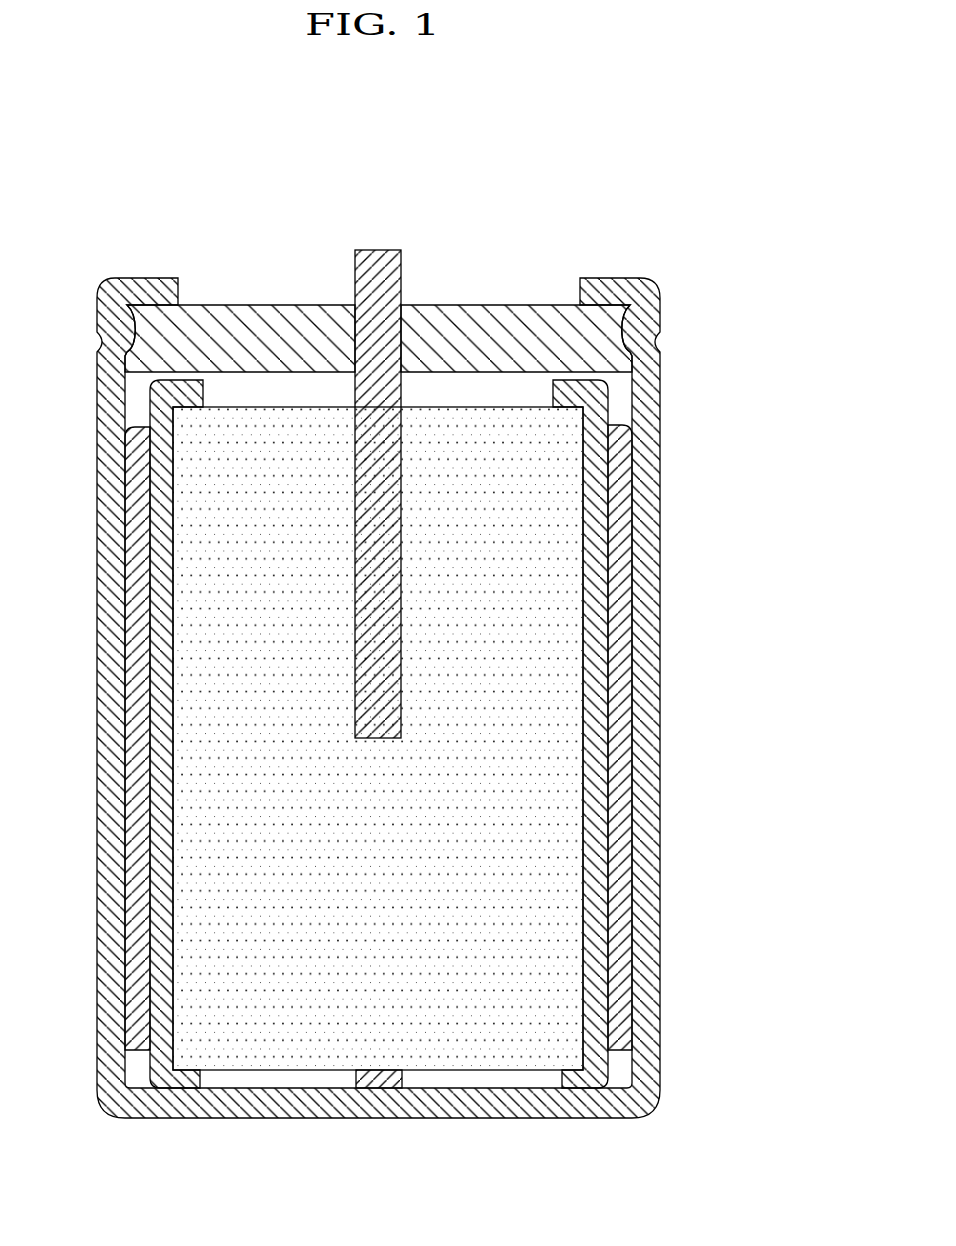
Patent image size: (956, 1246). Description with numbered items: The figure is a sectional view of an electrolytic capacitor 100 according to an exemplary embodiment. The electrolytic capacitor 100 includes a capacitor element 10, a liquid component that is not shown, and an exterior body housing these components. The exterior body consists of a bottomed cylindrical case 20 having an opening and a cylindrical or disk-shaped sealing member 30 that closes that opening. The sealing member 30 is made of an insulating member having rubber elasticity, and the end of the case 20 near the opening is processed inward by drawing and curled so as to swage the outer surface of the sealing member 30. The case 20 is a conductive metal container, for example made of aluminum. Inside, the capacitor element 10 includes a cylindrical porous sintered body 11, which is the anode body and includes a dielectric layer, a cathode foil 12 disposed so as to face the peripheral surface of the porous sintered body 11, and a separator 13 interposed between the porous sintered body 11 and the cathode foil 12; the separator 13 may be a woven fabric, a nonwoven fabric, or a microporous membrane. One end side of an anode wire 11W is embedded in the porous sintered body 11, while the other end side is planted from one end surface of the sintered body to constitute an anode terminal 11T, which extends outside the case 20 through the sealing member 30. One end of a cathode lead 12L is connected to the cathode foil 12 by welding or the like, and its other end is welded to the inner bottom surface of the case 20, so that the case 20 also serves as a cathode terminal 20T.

The electrolytic capacitor 100 is at (479, 169).
The capacitor element 10 is at (444, 734).
The porous sintered body 11 is at (540, 467).
The anode terminal 11T is at (355, 278).
The anode wire 11W is at (380, 572).
The cathode foil 12 is at (617, 488).
The cathode lead 12L is at (383, 1118).
The separator 13 is at (597, 543).
The case 20 is at (435, 698).
The cathode terminal 20T is at (648, 800).
The sealing member 30 is at (518, 330).